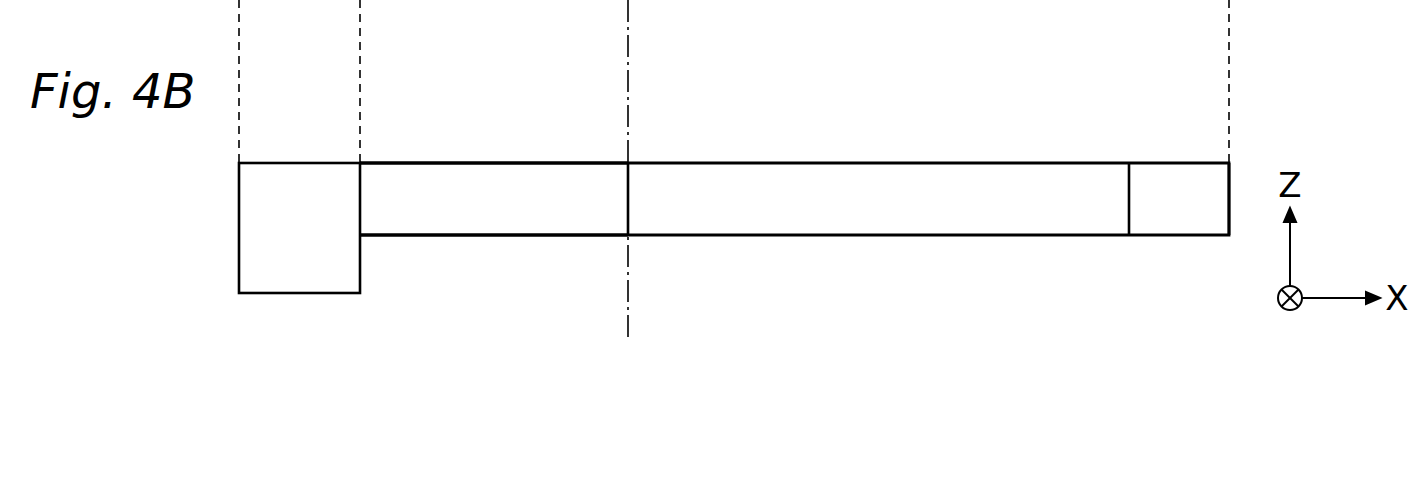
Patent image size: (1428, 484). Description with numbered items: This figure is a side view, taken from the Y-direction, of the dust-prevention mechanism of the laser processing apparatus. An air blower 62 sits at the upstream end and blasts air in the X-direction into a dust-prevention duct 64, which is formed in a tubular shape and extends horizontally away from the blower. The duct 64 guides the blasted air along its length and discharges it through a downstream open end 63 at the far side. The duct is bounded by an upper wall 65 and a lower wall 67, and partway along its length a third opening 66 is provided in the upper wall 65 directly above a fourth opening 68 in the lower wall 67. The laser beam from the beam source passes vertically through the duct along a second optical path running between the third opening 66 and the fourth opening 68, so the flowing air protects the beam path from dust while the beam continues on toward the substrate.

The air blower 62 is at (300, 293).
The downstream open end 63 is at (1229, 207).
The dust-prevention duct 64 is at (827, 164).
The upper wall 65 is at (494, 163).
The third opening 66 is at (628, 163).
The lower wall 67 is at (494, 235).
The fourth opening 68 is at (628, 235).